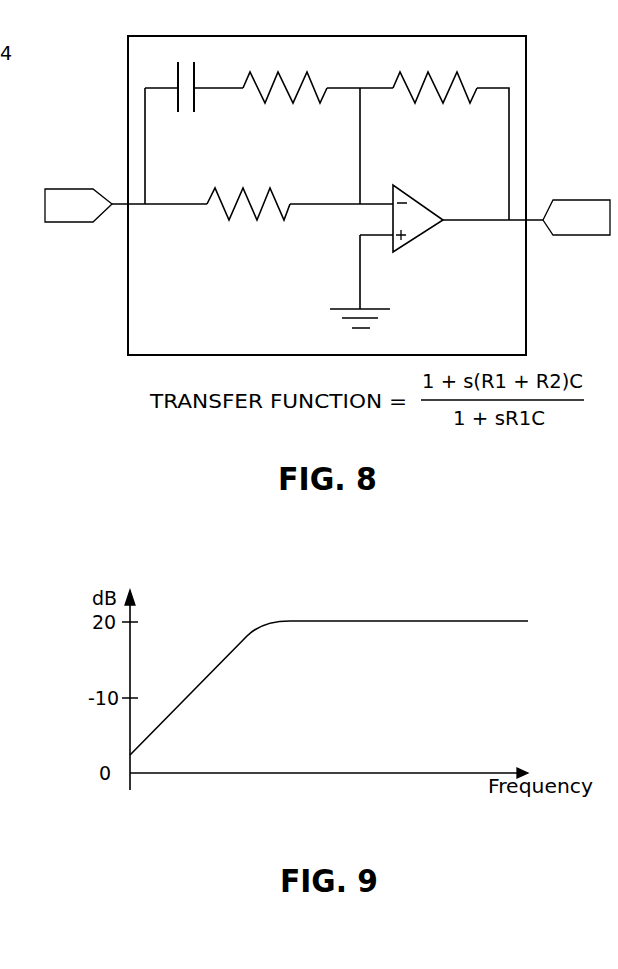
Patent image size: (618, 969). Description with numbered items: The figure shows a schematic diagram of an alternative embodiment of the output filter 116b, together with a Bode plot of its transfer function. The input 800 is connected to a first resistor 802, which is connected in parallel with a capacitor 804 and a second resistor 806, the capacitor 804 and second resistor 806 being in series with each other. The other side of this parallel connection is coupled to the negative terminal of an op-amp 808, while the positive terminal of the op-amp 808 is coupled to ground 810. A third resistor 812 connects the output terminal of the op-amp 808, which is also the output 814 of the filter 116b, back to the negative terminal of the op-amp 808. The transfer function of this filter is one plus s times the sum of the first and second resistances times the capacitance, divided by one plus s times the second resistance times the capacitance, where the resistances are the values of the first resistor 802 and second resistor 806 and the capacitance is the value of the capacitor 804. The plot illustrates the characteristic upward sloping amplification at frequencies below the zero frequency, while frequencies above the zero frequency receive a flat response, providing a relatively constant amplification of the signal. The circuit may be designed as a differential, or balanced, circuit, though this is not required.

The output filter 116b is at (519, 347).
The input 800 is at (70, 189).
The first resistor 802 is at (229, 221).
The capacitor 804 is at (178, 112).
The second resistor 806 is at (265, 103).
The op-amp 808 is at (418, 238).
The ground 810 is at (343, 309).
The third resistor 812 is at (415, 98).
The output 814 is at (602, 200).